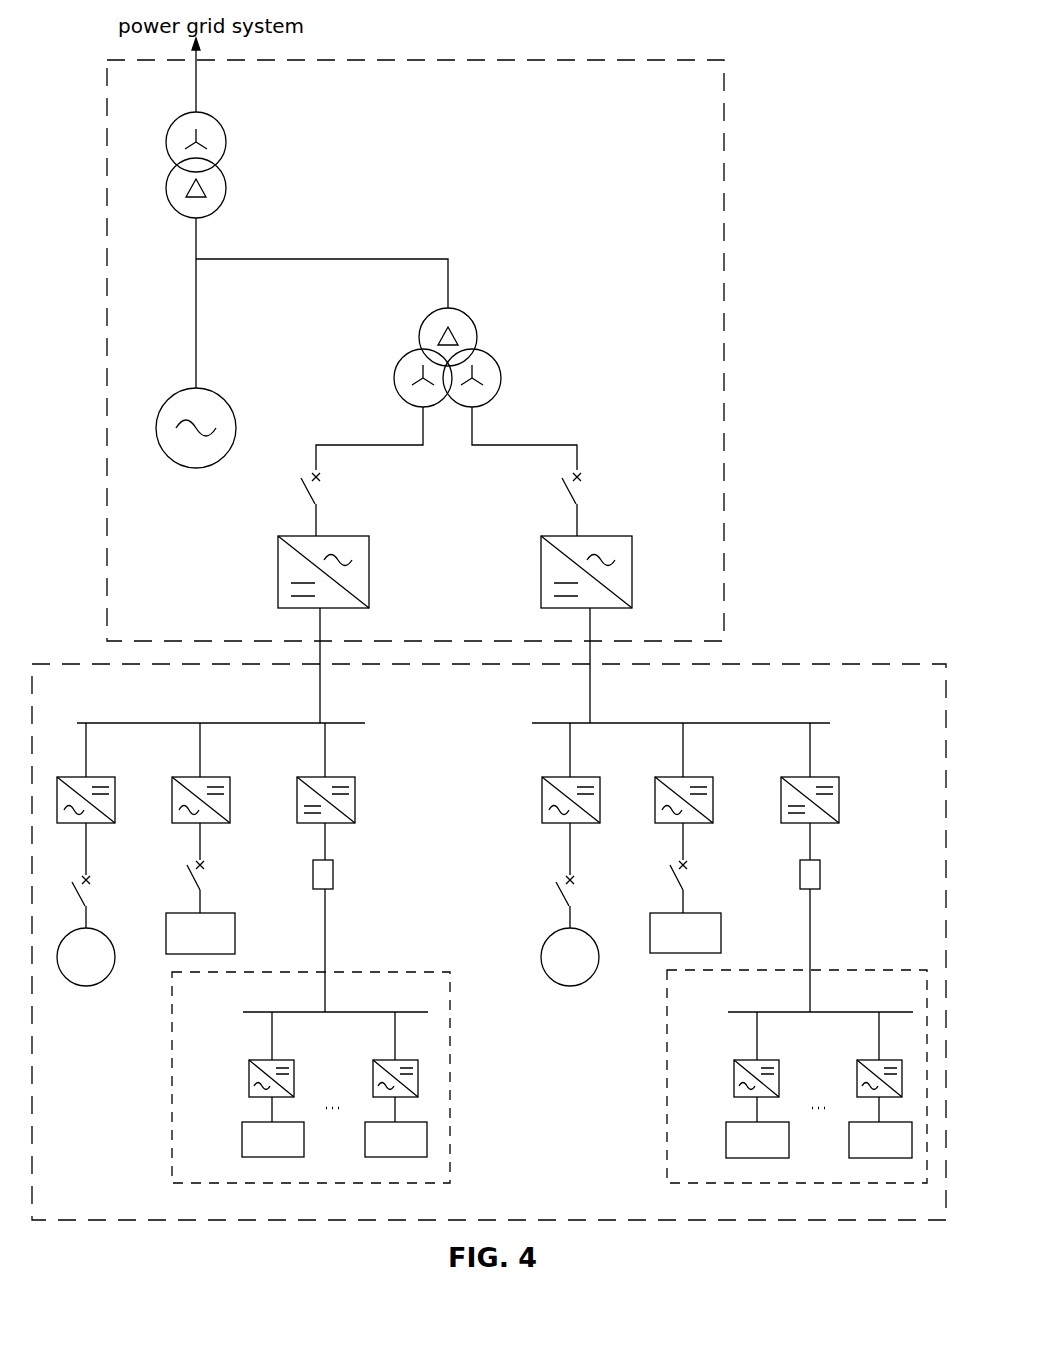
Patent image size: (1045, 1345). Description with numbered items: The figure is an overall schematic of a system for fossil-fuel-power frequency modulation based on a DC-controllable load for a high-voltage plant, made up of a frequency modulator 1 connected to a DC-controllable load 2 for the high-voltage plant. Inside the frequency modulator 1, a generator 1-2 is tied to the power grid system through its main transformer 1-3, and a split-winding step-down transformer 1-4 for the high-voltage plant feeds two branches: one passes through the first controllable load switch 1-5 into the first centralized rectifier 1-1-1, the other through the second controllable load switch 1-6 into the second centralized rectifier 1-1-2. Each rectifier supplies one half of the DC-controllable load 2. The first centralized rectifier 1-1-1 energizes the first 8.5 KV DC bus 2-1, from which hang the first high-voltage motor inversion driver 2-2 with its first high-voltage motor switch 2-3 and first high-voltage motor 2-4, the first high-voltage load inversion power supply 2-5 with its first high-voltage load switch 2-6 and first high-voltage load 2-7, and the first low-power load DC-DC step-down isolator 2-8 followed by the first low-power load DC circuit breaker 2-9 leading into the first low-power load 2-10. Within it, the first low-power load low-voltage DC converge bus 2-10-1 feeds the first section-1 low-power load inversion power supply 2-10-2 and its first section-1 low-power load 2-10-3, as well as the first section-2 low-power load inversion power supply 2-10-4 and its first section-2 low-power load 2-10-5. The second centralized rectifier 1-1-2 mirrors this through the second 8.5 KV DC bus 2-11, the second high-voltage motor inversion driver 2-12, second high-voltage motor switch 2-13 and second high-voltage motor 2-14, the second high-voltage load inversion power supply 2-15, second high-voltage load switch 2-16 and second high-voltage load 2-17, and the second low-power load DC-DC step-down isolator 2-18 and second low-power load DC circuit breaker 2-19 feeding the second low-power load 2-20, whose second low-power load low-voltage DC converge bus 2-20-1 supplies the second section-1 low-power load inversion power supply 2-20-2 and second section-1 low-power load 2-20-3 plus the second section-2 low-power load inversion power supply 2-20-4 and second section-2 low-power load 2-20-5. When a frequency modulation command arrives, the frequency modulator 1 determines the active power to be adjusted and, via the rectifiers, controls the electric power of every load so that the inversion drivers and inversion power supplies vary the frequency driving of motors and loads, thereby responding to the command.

The frequency modulator 1 is at (724, 182).
The generator 1-2 is at (208, 383).
The main transformer 1-3 is at (225, 143).
The split-winding step-down transformer 1-4 is at (493, 345).
The first controllable load switch 1-5 is at (303, 475).
The second controllable load switch 1-6 is at (588, 473).
The first centralized rectifier 1-1-1 is at (344, 530).
The second centralized rectifier 1-1-2 is at (557, 530).
The DC-controllable load 2 is at (750, 660).
The first 8.5 KV DC bus 2-1 is at (202, 723).
The first high-voltage motor inversion driver 2-2 is at (97, 777).
The first high-voltage motor switch 2-3 is at (92, 895).
The first high-voltage motor 2-4 is at (107, 932).
The first high-voltage load inversion power supply 2-5 is at (212, 777).
The first high-voltage load switch 2-6 is at (205, 883).
The first high-voltage load 2-7 is at (237, 923).
The first low-power load DC-DC step-down isolator 2-8 is at (328, 777).
The first low-power load DC circuit breaker 2-9 is at (335, 883).
The first low-power load 2-10 is at (450, 1035).
The first low-power load low-voltage DC converge bus 2-10-1 is at (345, 1011).
The first section-1 low-power load inversion power supply 2-10-2 is at (249, 1068).
The first section-1 low-power load 2-10-3 is at (245, 1122).
The first section-2 low-power load inversion power supply 2-10-4 is at (373, 1068).
The first section-2 low-power load 2-10-5 is at (365, 1122).
The second 8.5 KV DC bus 2-11 is at (627, 721).
The second high-voltage motor inversion driver 2-12 is at (584, 776).
The second high-voltage motor switch 2-13 is at (575, 893).
The second high-voltage motor 2-14 is at (608, 920).
The second high-voltage load inversion power supply 2-15 is at (697, 776).
The second high-voltage load switch 2-16 is at (688, 885).
The second high-voltage load 2-17 is at (738, 910).
The second low-power load DC-DC step-down isolator 2-18 is at (812, 776).
The second low-power load DC circuit breaker 2-19 is at (819, 883).
The second low-power load 2-20 is at (667, 1023).
The second low-power load low-voltage DC converge bus 2-20-1 is at (820, 1012).
The second section-1 low-power load inversion power supply 2-20-2 is at (734, 1070).
The second section-1 low-power load 2-20-3 is at (727, 1122).
The second section-2 low-power load inversion power supply 2-20-4 is at (857, 1070).
The second section-2 low-power load 2-20-5 is at (848, 1122).